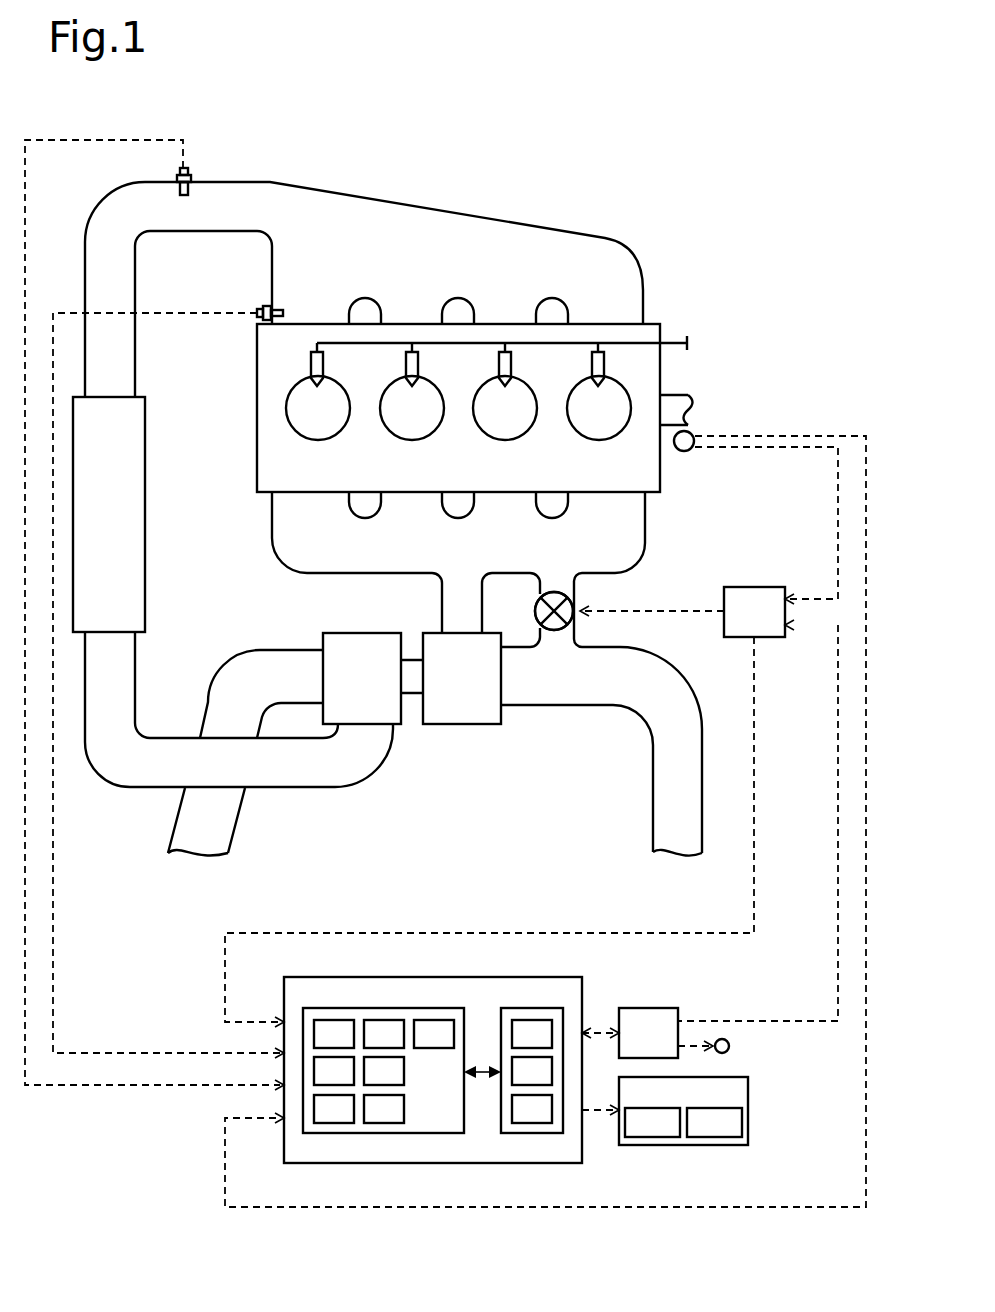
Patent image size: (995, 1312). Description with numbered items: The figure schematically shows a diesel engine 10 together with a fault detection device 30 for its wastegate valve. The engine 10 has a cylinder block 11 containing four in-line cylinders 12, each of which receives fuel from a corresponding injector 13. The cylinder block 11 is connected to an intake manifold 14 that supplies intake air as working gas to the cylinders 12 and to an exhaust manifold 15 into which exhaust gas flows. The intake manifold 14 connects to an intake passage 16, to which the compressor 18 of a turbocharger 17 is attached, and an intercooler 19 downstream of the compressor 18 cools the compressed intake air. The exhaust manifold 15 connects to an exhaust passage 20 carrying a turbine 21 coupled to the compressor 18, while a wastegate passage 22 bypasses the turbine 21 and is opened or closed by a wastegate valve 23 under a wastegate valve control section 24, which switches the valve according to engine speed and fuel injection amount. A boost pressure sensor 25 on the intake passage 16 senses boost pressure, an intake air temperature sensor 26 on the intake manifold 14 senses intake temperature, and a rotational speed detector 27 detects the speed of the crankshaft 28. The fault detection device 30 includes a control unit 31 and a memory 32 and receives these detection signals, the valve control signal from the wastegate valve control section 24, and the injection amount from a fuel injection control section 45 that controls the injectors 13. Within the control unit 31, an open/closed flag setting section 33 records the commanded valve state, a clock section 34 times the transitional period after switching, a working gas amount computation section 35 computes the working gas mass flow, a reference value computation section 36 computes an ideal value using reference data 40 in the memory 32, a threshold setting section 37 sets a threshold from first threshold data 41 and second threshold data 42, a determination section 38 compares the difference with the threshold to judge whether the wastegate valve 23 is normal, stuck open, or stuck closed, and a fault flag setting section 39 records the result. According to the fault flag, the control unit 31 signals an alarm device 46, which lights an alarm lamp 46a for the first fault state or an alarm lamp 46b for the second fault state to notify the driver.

The diesel engine 10 is at (657, 175).
The cylinder block 11 is at (257, 366).
The cylinders 12 is at (388, 436).
The injector 13 is at (323, 362).
The intake manifold 14 is at (502, 221).
The exhaust manifold 15 is at (645, 530).
The intake passage 16 is at (138, 790).
The turbocharger 17 is at (412, 725).
The compressor 18 is at (400, 726).
The intercooler 19 is at (146, 542).
The exhaust passage 20 is at (652, 806).
The turbine 21 is at (462, 704).
The wastegate passage 22 is at (572, 582).
The wastegate valve 23 is at (572, 626).
The wastegate valve control section 24 is at (754, 612).
The boost pressure sensor 25 is at (190, 178).
The intake air temperature sensor 26 is at (257, 312).
The rotational speed detector 27 is at (684, 451).
The crankshaft 28 is at (688, 393).
The fault detection device 30 is at (527, 977).
The control unit 31 is at (422, 1008).
The memory 32 is at (520, 1008).
The open/closed flag setting section 33 is at (334, 1035).
The clock section 34 is at (334, 1072).
The working gas amount computation section 35 is at (334, 1110).
The reference value computation section 36 is at (384, 1035).
The threshold setting section 37 is at (384, 1072).
The determination section 38 is at (384, 1110).
The fault flag setting section 39 is at (434, 1035).
The reference data 40 is at (532, 1035).
The first threshold data 41 is at (532, 1072).
The second threshold data 42 is at (532, 1110).
The fuel injection control section 45 is at (648, 1033).
The alarm device 46 is at (683, 1111).
The alarm lamp 46a is at (652, 1122).
The alarm lamp 46b is at (714, 1122).